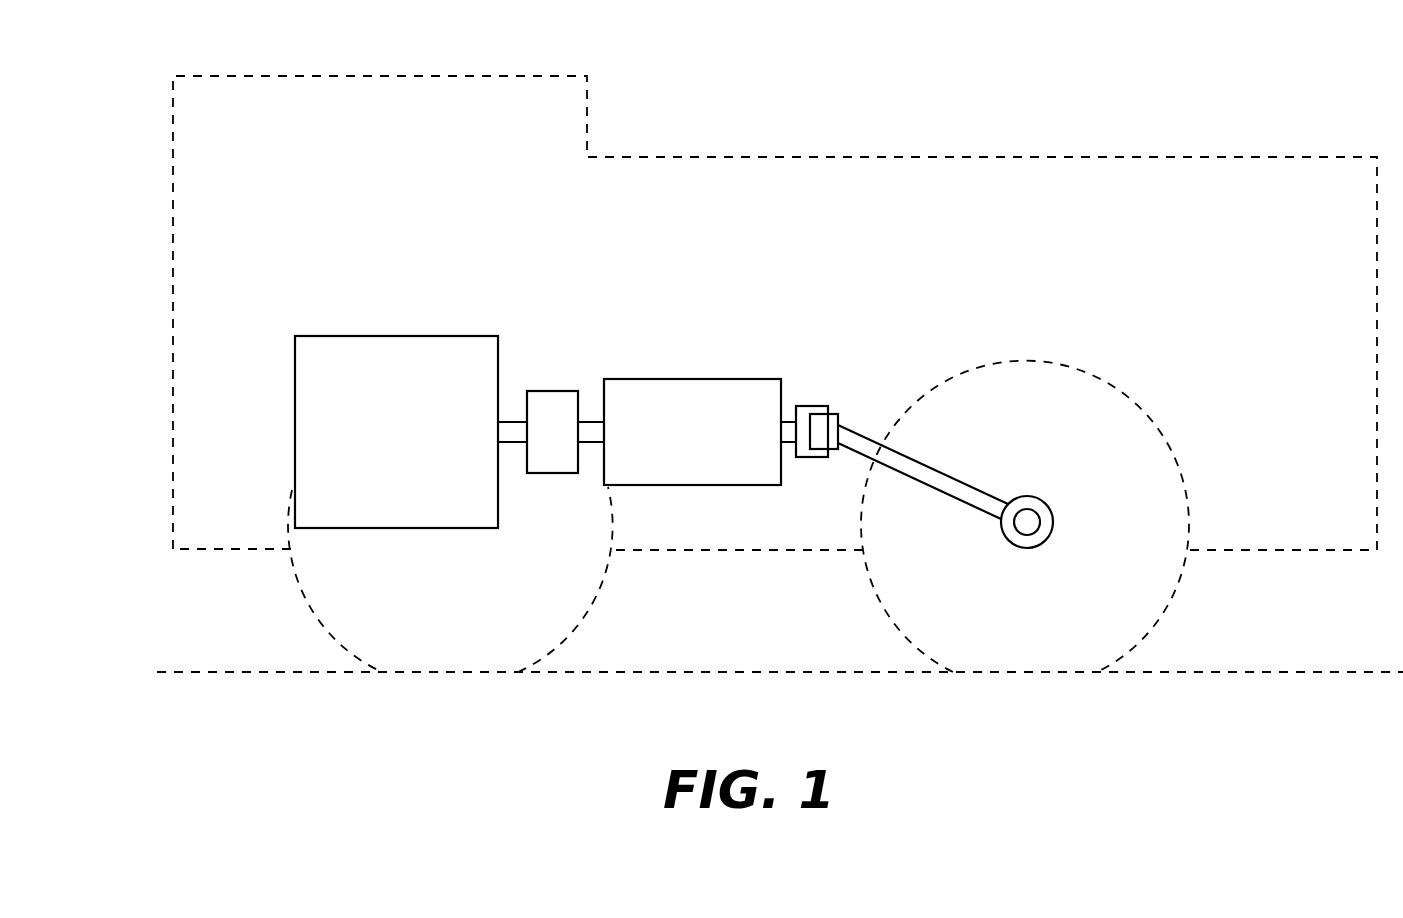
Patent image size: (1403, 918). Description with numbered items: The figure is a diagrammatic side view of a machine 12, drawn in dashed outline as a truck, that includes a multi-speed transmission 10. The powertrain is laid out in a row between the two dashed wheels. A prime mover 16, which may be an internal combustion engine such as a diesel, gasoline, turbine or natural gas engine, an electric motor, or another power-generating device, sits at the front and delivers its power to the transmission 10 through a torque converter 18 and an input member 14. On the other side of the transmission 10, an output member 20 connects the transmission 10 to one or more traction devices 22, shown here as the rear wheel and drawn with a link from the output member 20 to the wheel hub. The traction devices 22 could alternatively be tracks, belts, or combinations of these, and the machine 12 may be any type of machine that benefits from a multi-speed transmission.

The multi-speed transmission 10 is at (677, 442).
The machine 12 is at (1075, 128).
The input member 14 is at (586, 422).
The prime mover 16 is at (381, 444).
The torque converter 18 is at (553, 391).
The output member 20 is at (814, 406).
The traction devices 22 is at (1153, 420).